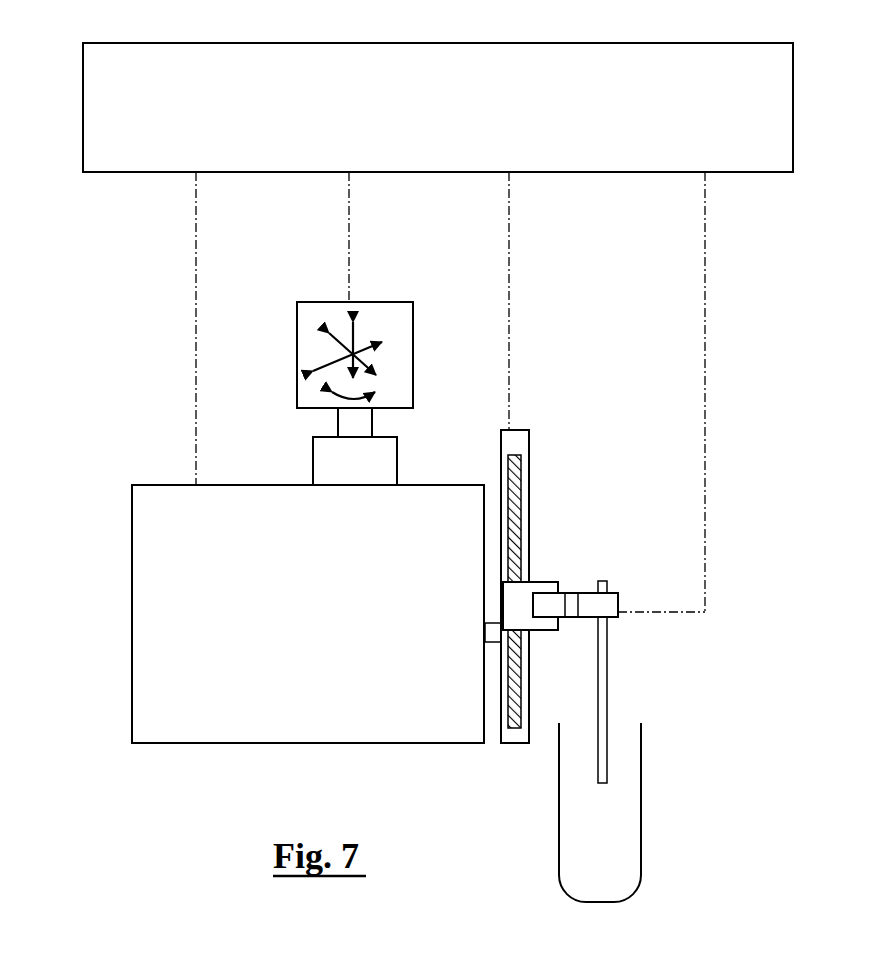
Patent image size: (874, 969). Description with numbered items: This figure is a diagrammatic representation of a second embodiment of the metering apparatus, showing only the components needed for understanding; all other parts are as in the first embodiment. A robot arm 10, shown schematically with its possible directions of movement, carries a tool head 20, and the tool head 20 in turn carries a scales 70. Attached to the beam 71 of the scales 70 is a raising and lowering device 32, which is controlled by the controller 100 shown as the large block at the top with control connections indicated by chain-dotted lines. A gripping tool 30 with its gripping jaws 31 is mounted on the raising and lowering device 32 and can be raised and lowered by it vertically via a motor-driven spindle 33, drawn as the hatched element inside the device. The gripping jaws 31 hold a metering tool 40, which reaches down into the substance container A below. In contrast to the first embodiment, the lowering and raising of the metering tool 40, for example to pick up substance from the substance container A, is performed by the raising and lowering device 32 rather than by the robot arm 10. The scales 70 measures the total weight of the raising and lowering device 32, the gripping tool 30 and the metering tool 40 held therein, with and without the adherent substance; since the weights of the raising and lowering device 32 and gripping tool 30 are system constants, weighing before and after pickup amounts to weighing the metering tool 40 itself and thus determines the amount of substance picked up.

The controller 100 is at (165, 150).
The robot arm 10 is at (313, 345).
The tool head 20 is at (320, 465).
The scales 70 is at (237, 697).
The beam 71 is at (495, 633).
The raising and lowering device 32 is at (498, 432).
The motor-driven spindle 33 is at (505, 473).
The gripping tool 30 is at (540, 582).
The gripping jaws 31 is at (620, 600).
The metering tool 40 is at (608, 673).
The substance container A is at (642, 805).